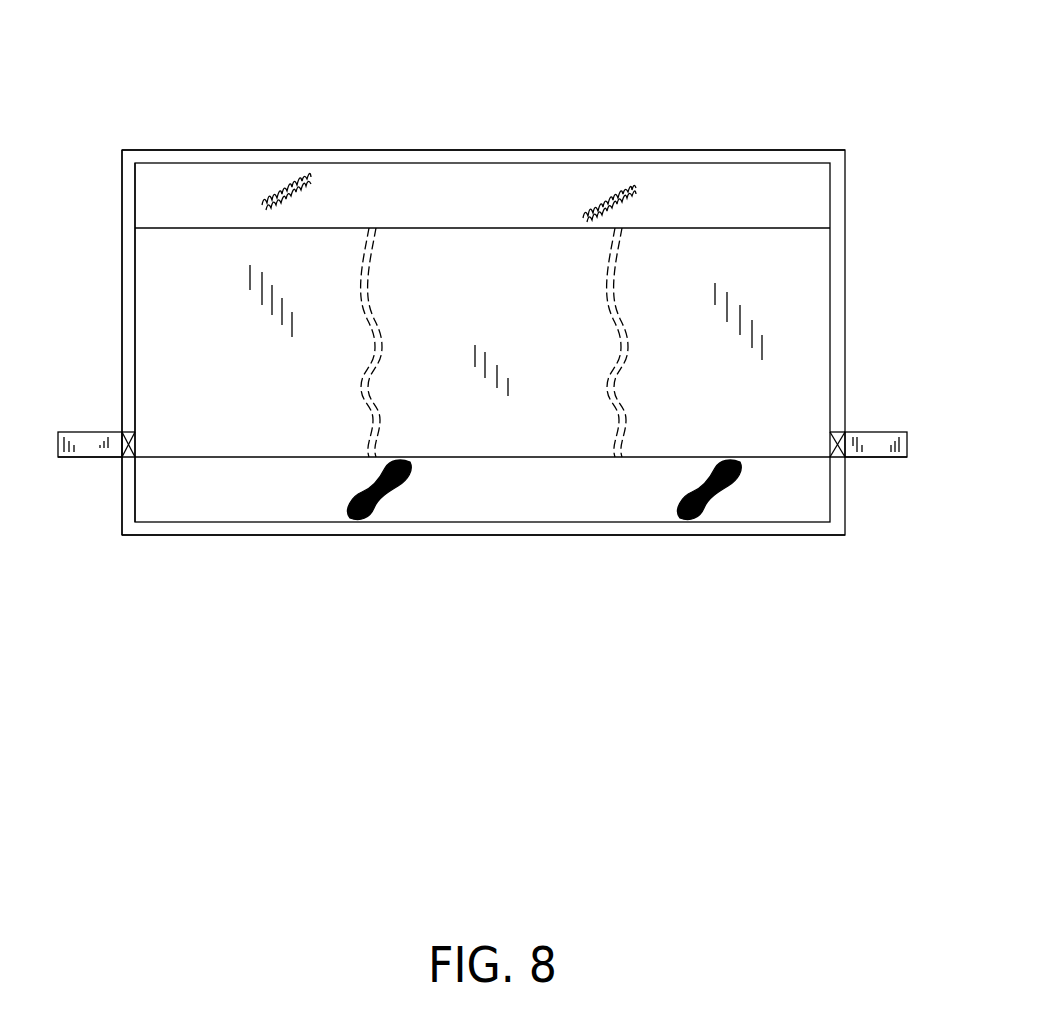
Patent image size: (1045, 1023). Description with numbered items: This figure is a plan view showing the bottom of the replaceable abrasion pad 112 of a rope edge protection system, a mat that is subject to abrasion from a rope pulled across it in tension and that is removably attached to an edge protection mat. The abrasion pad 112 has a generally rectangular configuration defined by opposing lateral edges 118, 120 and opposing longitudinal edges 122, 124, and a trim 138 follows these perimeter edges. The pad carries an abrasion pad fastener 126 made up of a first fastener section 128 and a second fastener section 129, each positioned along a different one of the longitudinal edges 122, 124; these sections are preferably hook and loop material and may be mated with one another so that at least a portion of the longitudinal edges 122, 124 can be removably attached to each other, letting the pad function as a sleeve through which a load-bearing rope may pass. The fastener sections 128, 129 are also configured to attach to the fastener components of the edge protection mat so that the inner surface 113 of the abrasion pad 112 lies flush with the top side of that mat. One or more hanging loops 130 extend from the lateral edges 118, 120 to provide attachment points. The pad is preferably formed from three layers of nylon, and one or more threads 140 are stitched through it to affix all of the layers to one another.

The replaceable abrasion pad 112 is at (490, 321).
The inner surface 113 is at (519, 299).
The lateral edge 118 is at (122, 303).
The lateral edge 120 is at (845, 283).
The longitudinal edge 122 is at (360, 150).
The longitudinal edge 124 is at (432, 535).
The abrasion pad fastener 126 is at (212, 193).
The first fastener section 128 is at (778, 190).
The second fastener section 129 is at (783, 493).
The hanging loop 130 is at (908, 427).
The trim 138 is at (162, 148).
The thread 140 is at (365, 300).